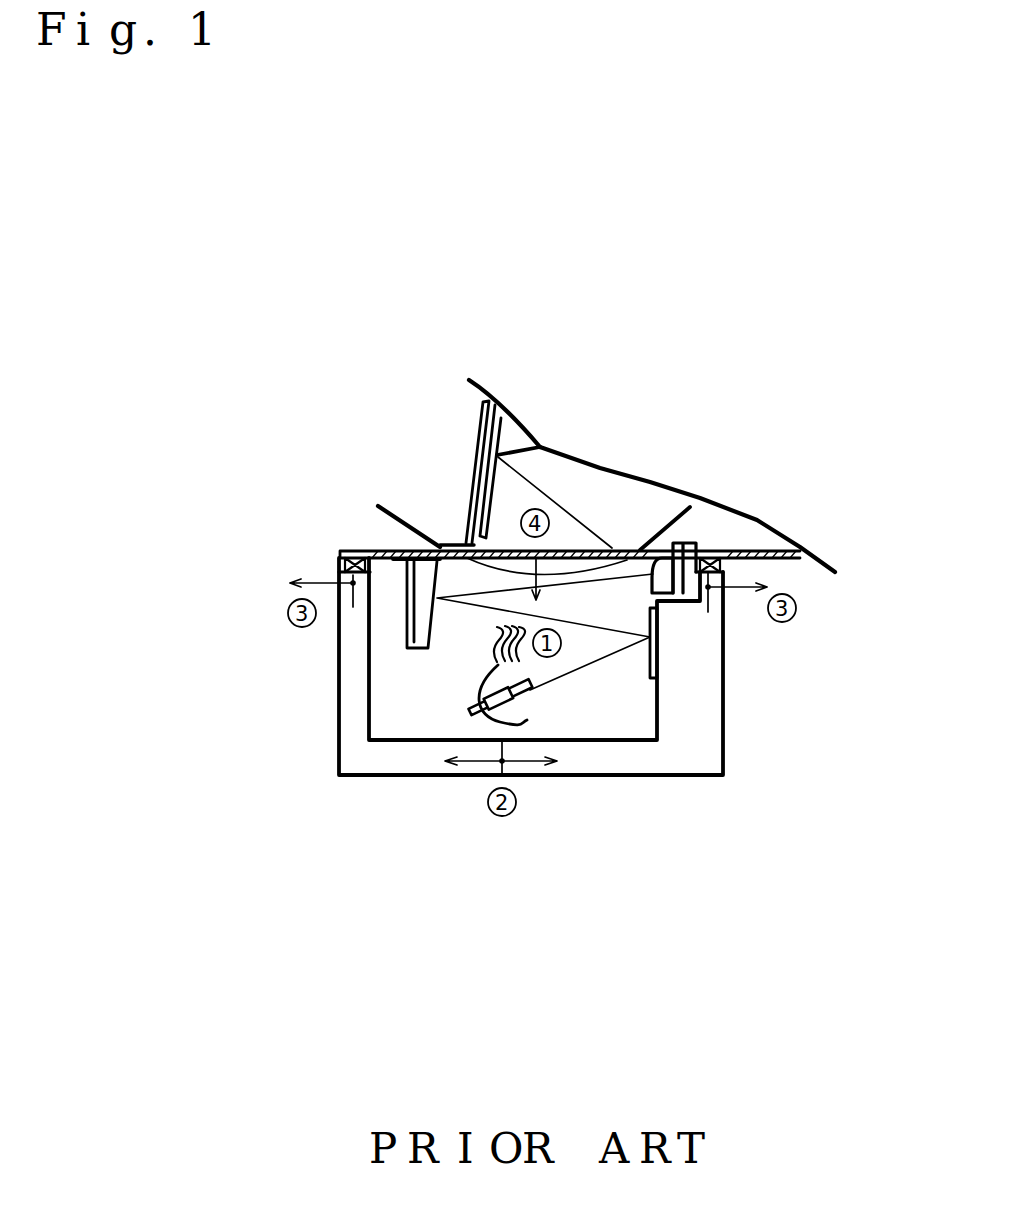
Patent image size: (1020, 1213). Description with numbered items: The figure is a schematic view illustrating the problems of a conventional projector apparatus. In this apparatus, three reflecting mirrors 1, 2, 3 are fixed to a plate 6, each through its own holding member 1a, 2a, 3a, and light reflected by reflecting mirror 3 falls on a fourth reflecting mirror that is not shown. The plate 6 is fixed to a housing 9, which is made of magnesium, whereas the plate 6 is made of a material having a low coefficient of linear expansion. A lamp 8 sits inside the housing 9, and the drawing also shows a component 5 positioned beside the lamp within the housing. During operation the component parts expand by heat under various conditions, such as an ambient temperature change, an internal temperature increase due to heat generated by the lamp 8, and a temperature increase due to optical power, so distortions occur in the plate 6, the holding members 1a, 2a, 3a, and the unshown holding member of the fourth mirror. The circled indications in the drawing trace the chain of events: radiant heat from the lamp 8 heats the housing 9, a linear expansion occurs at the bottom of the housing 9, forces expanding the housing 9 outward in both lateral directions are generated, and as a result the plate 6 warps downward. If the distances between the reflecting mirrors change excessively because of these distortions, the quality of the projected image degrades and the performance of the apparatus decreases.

The reflecting mirror 1 is at (428, 599).
The holding member 1a is at (413, 633).
The reflecting mirror 2 is at (662, 551).
The holding member 2a is at (686, 544).
The reflecting mirror 3 is at (495, 435).
The holding member 3a is at (470, 497).
The heat shield plate 5 is at (657, 647).
The plate 6 is at (803, 560).
The lamp 8 is at (467, 697).
The housing 9 is at (723, 718).